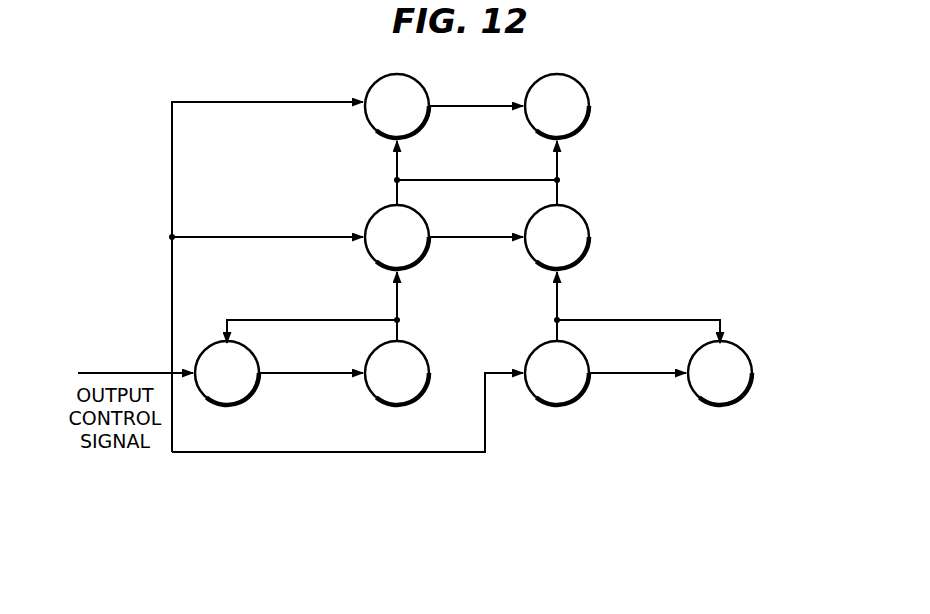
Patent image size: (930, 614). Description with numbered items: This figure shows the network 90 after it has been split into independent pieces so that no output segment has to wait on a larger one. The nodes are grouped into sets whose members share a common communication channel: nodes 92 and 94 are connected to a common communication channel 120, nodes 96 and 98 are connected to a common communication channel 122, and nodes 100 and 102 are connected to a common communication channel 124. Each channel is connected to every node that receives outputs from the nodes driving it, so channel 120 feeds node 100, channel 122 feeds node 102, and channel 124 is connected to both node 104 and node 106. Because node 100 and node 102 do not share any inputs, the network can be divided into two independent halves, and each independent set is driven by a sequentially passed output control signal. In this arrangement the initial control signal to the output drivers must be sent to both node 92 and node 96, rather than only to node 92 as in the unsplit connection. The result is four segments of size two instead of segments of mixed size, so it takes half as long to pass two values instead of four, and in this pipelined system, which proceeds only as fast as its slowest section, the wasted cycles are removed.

The network 90 is at (742, 187).
The node 92 is at (250, 398).
The node 94 is at (427, 397).
The node 96 is at (590, 395).
The node 98 is at (754, 367).
The node 100 is at (427, 258).
The node 102 is at (590, 258).
The node 104 is at (372, 84).
The node 106 is at (590, 111).
The common communication channel 120 is at (323, 320).
The common communication channel 122 is at (676, 320).
The common communication channel 124 is at (492, 180).